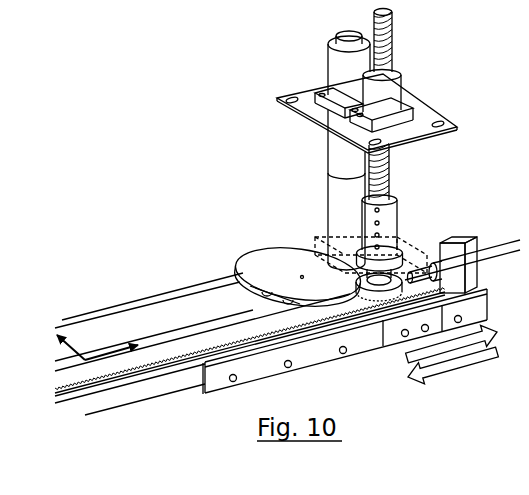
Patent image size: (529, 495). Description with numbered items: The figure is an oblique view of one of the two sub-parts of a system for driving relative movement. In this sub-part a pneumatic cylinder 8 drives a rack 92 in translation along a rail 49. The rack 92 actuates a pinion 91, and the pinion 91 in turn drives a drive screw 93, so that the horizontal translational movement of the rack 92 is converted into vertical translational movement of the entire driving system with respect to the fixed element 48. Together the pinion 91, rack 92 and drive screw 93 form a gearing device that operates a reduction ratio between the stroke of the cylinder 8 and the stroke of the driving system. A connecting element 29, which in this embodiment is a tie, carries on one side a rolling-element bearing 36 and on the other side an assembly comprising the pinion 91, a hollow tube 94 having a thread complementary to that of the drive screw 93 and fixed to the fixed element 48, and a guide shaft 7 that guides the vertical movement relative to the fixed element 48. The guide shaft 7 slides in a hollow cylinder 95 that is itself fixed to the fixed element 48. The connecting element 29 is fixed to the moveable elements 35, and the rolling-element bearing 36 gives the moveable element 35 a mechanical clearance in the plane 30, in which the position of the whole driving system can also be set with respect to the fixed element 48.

The guide shaft 7 is at (347, 208).
The pneumatic cylinder 8 is at (490, 263).
The connecting element 29 is at (305, 255).
The plane 30 is at (107, 322).
The moveable element 35 is at (152, 348).
The rolling-element bearing 36 is at (302, 278).
The fixed element 48 is at (418, 126).
The rail 49 is at (246, 368).
The pinion 91 is at (392, 300).
The rack 92 is at (83, 388).
The drive screw 93 is at (382, 167).
The hollow tube 94 is at (380, 92).
The hollow cylinder 95 is at (343, 68).